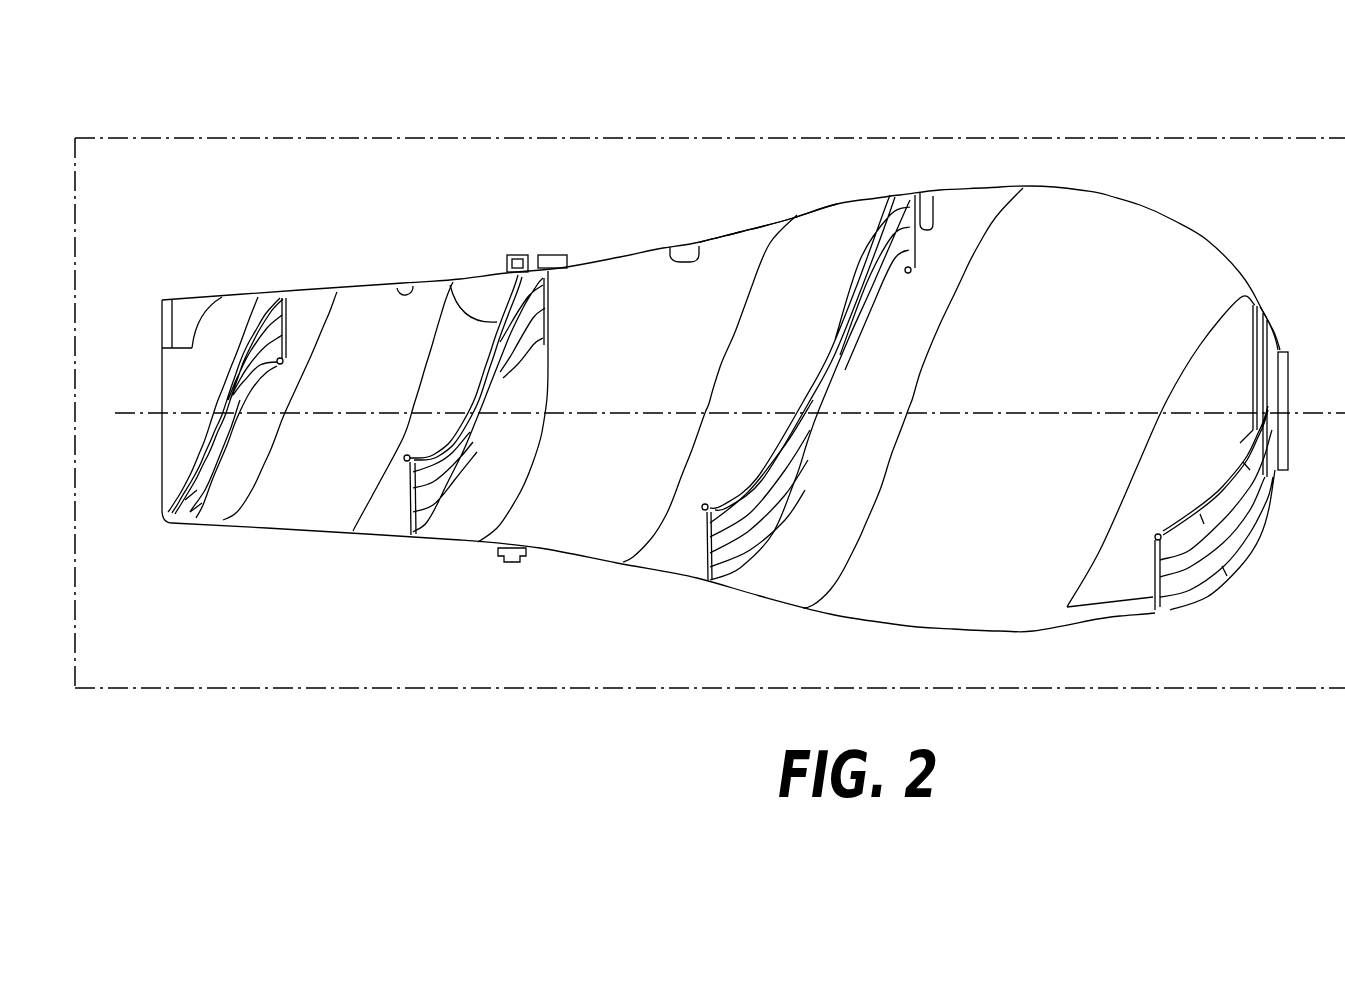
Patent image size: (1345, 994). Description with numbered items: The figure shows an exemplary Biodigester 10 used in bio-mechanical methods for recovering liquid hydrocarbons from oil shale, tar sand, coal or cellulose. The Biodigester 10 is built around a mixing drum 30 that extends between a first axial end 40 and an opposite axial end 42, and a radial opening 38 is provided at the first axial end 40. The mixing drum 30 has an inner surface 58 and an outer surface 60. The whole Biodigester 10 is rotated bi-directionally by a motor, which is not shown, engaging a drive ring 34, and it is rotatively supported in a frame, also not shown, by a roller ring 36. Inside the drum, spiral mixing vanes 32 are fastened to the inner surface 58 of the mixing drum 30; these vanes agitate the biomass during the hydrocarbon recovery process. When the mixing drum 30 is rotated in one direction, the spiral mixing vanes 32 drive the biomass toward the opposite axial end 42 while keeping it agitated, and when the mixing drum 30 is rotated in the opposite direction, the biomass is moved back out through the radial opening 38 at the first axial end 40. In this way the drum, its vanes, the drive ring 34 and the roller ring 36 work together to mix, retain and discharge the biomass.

The Biodigester 10 is at (563, 113).
The mixing drum 30 is at (362, 273).
The spiral mixing vanes 32 is at (932, 217).
The drive ring 34 is at (1290, 370).
The roller ring 36 is at (515, 257).
The radial opening 38 is at (160, 311).
The first axial end 40 is at (240, 216).
The opposite axial end 42 is at (1190, 172).
The inner surface 58 is at (668, 250).
The outer surface 60 is at (752, 222).